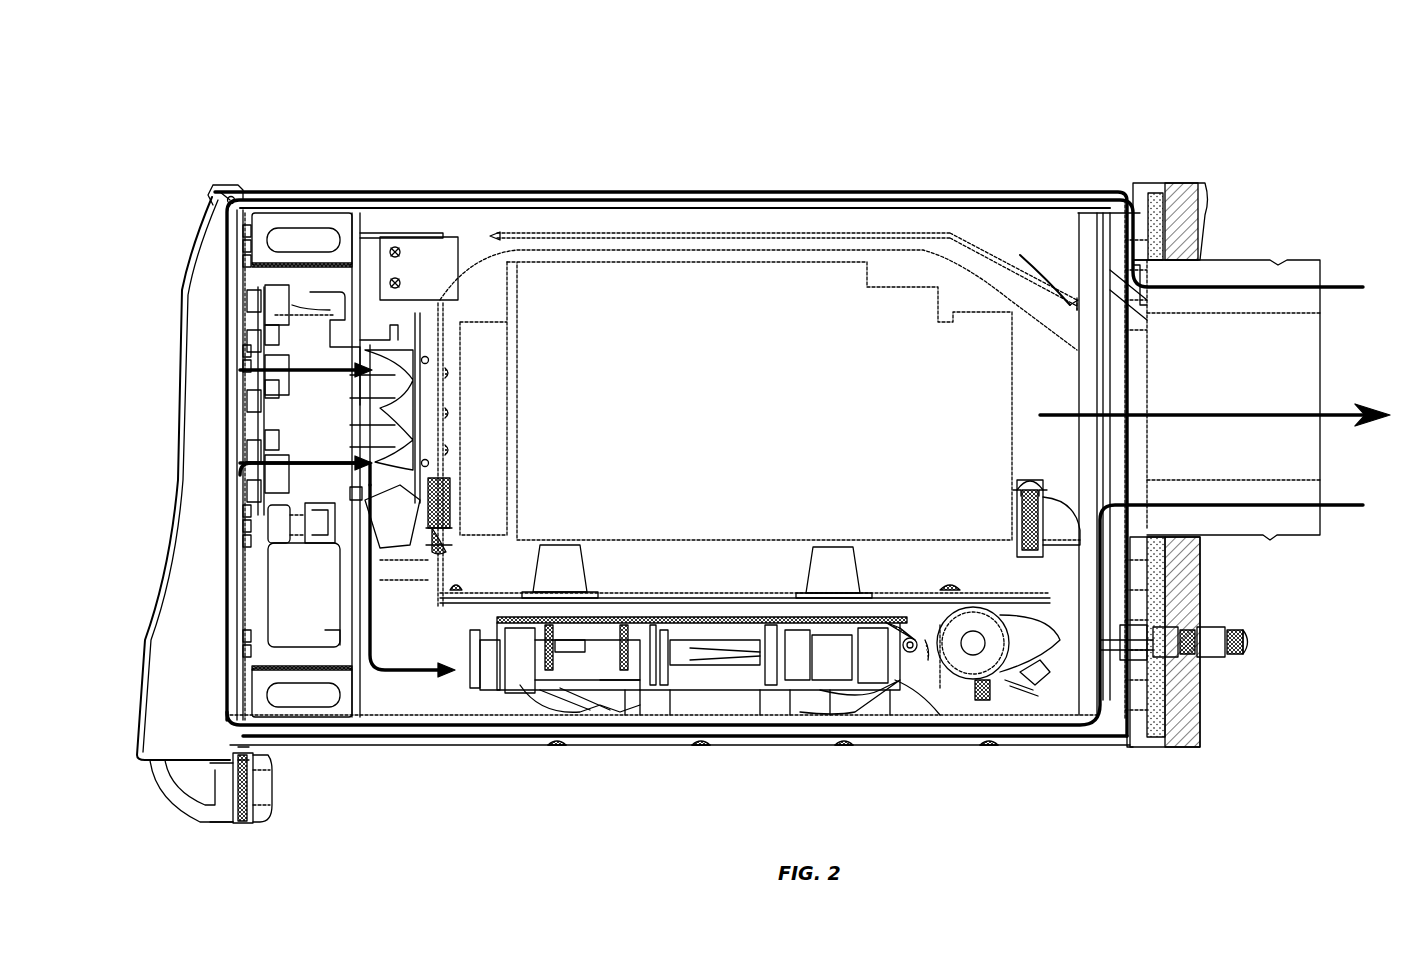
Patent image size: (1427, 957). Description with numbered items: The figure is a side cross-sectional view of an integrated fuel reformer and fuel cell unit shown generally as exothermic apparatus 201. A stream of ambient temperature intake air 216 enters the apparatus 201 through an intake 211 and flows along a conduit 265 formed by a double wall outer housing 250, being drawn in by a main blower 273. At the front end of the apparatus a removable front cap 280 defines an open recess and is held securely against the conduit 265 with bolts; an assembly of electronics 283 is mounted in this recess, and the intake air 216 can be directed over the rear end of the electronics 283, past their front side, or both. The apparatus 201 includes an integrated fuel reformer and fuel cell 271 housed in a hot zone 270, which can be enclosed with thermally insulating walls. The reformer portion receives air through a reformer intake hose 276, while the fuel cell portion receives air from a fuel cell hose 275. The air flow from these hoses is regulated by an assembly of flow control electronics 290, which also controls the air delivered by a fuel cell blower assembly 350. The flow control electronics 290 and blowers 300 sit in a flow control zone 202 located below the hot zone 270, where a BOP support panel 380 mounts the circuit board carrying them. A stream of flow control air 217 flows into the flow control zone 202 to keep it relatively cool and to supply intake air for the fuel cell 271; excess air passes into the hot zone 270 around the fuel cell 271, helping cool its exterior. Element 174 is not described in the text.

The exothermic apparatus 201 is at (897, 97).
The double wall outer housing 250 is at (872, 192).
The conduit 265 is at (621, 205).
The main blower 273 is at (329, 347).
The assembly of electronics 283 is at (240, 407).
The fuel cell hose 275 is at (393, 532).
The motor 174 is at (440, 493).
The integrated fuel reformer and fuel cell 271 is at (736, 425).
The hot zone 270 is at (1060, 390).
The intake air 216 is at (1340, 287).
The intake 211 is at (1322, 447).
The reformer intake hose 276 is at (1065, 530).
The flow control zone 202 is at (918, 710).
The blowers 300 is at (600, 692).
The fuel cell blower assembly 350 is at (868, 713).
The BOP support panel 380 is at (910, 640).
The flow control electronics 290 is at (798, 627).
The front cap 280 is at (143, 645).
The flow control air 217 is at (390, 672).